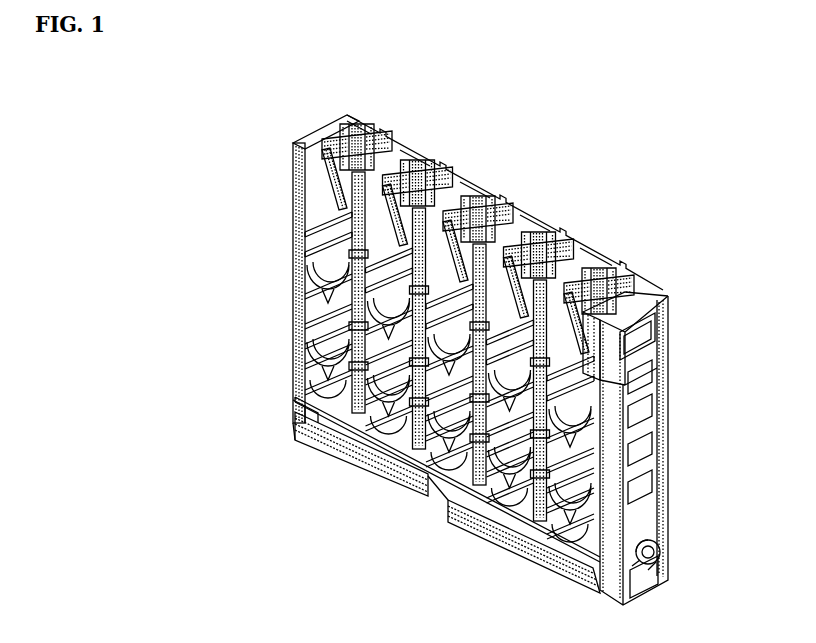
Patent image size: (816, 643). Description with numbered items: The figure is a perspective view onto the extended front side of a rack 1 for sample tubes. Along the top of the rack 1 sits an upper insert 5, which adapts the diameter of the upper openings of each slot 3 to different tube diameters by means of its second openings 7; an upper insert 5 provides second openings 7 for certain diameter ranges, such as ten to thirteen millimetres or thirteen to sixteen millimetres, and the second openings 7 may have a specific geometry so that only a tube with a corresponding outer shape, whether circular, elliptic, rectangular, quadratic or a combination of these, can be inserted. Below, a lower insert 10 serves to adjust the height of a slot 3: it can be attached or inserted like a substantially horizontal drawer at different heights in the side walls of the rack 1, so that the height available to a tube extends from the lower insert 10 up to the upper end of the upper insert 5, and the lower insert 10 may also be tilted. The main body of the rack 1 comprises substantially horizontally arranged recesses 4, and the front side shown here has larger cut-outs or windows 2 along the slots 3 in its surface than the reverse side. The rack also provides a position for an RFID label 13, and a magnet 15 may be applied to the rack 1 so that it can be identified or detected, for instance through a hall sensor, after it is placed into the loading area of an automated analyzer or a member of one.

The rack 1 is at (221, 280).
The windows 2 is at (314, 215).
The slot 3 is at (695, 430).
The recesses 4 is at (290, 267).
The upper insert 5 is at (556, 227).
The second openings 7 is at (480, 202).
The lower insert 10 is at (291, 310).
The RFID label 13 is at (445, 478).
The magnet 15 is at (654, 554).